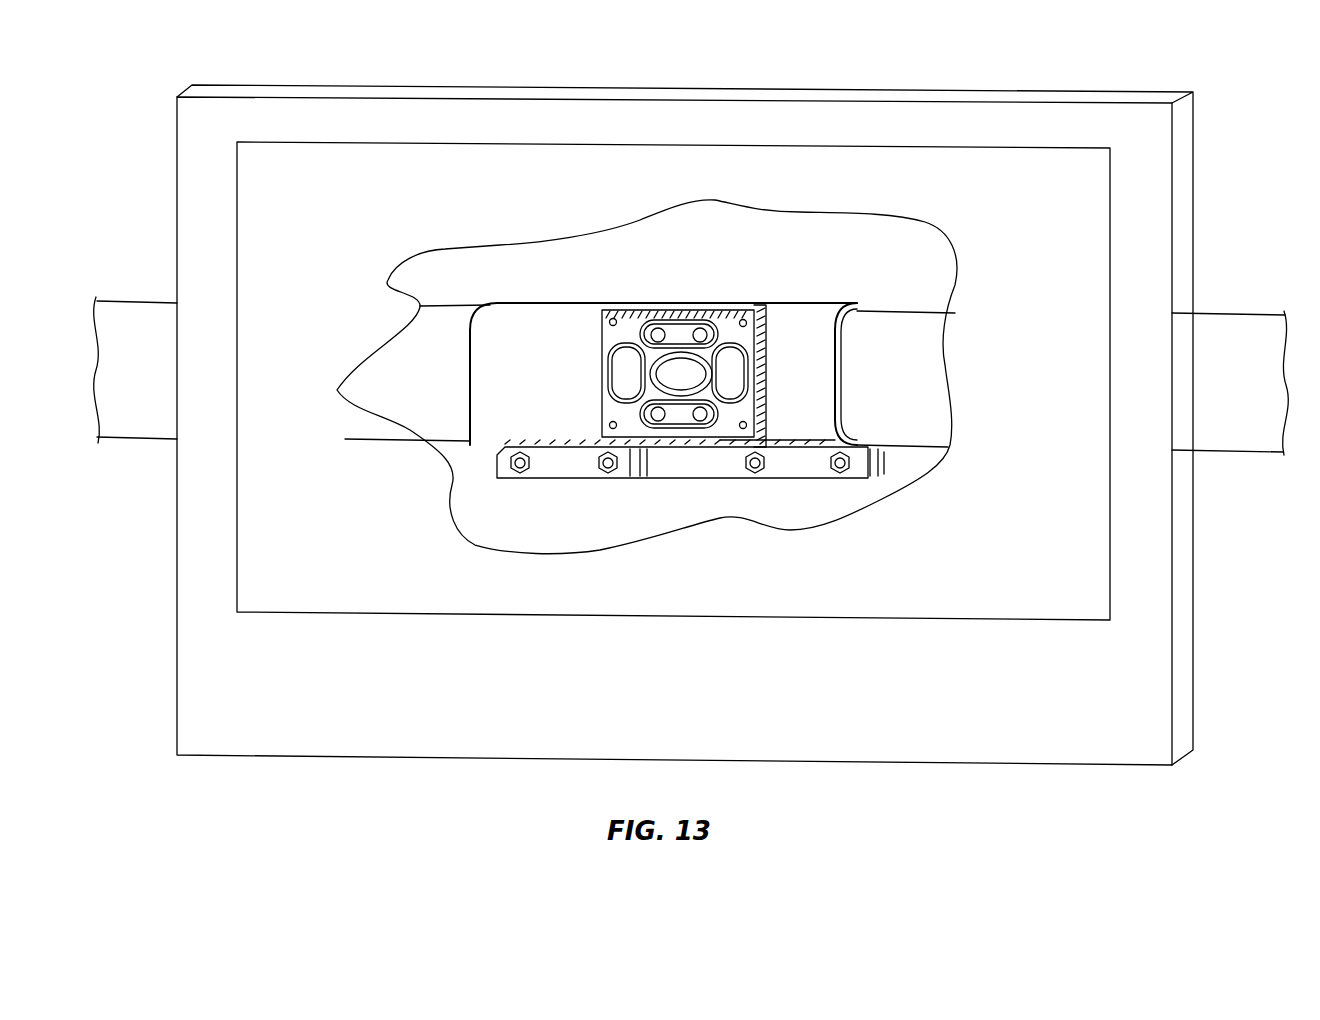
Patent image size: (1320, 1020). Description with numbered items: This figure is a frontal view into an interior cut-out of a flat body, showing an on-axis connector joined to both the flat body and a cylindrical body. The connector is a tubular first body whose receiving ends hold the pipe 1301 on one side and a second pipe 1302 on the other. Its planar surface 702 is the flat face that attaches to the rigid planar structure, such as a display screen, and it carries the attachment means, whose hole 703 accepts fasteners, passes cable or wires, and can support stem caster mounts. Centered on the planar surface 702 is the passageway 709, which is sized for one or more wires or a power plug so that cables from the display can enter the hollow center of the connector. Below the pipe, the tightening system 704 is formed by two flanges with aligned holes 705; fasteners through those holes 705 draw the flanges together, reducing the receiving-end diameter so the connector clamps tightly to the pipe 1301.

The planar surface 702 is at (730, 322).
The hole 703 is at (680, 333).
The passageway 709 is at (687, 370).
The tightening system 704 is at (808, 473).
The holes 705 is at (755, 473).
The pipe 1301 is at (1235, 323).
The pipe section 1302 is at (137, 432).